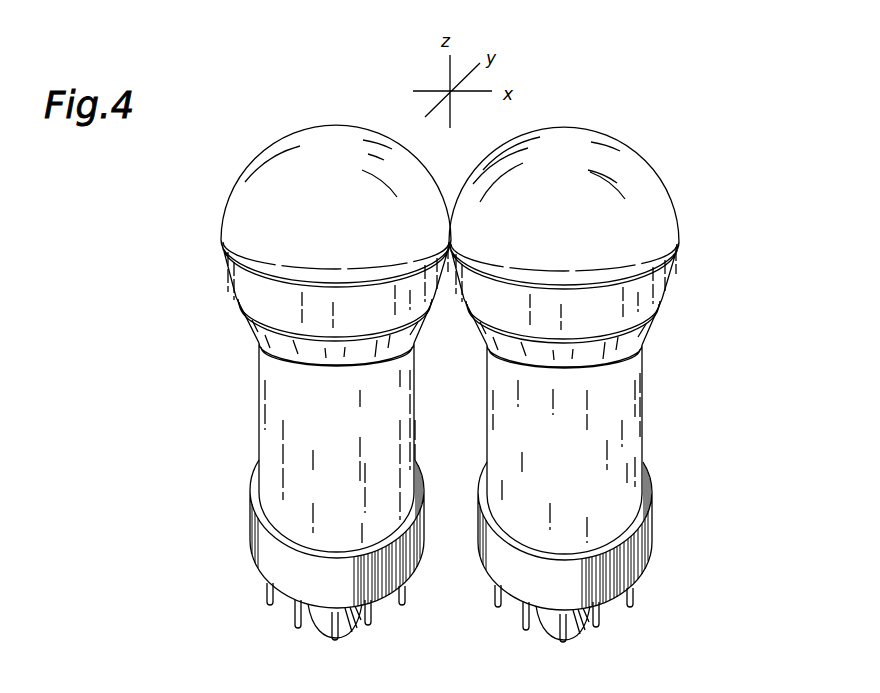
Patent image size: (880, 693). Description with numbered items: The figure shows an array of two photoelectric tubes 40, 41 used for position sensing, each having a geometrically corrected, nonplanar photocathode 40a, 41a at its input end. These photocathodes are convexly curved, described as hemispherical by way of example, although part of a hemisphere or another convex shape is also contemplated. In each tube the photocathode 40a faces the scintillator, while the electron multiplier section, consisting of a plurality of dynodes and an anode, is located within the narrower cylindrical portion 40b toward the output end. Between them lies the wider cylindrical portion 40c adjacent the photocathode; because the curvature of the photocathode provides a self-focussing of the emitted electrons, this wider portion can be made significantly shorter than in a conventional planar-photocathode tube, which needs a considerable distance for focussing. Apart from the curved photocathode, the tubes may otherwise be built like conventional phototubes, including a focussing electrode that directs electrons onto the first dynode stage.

The photoelectric tube 40 is at (238, 416).
The photocathode 40a is at (246, 194).
The narrower cylindrical portion 40b is at (417, 395).
The wider cylindrical portion 40c is at (243, 277).
The photoelectric tube 41 is at (472, 386).
The photocathode 41a is at (429, 199).